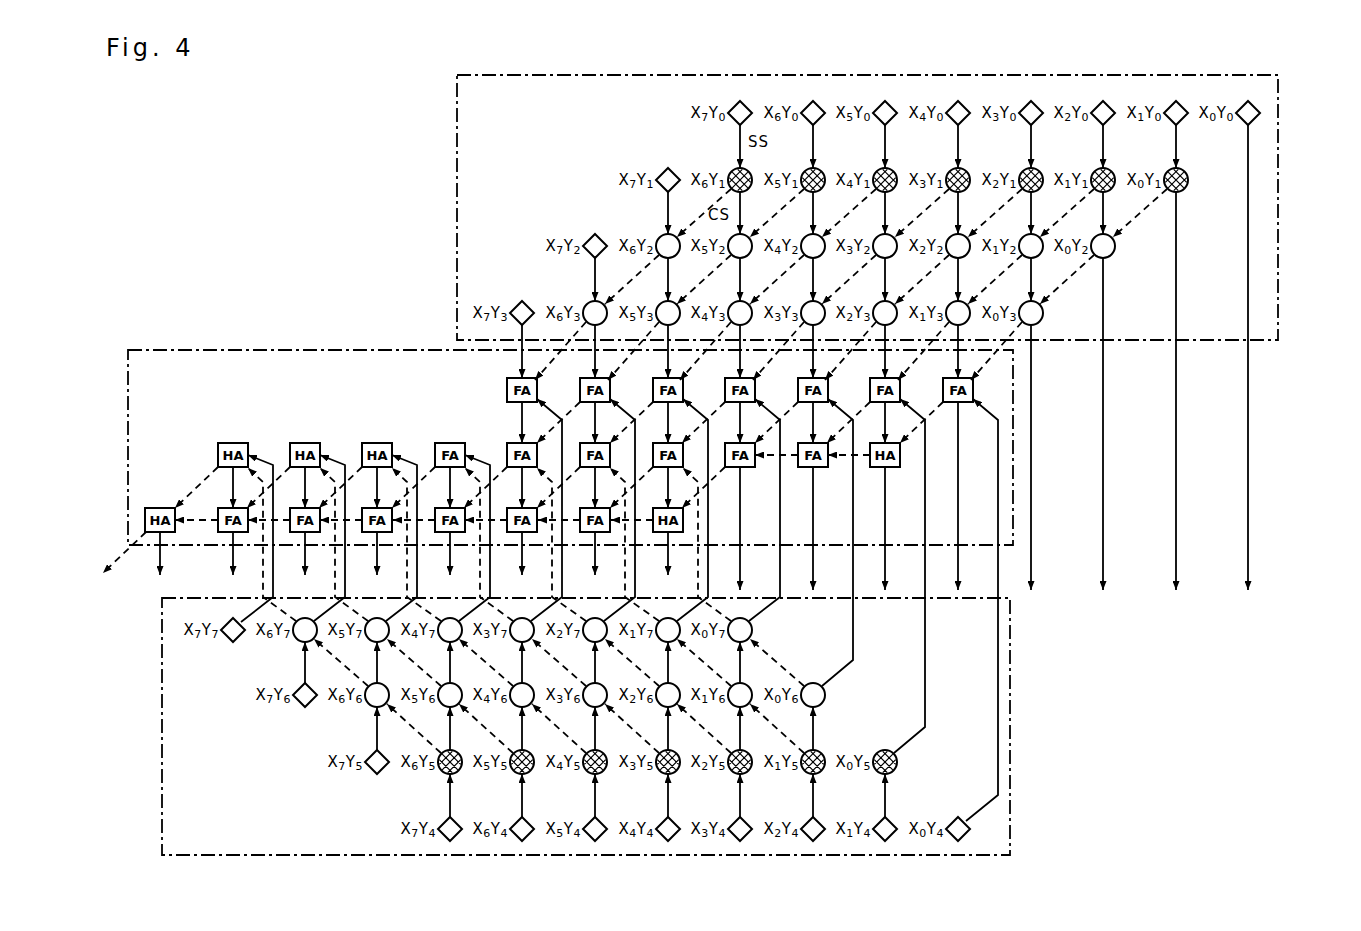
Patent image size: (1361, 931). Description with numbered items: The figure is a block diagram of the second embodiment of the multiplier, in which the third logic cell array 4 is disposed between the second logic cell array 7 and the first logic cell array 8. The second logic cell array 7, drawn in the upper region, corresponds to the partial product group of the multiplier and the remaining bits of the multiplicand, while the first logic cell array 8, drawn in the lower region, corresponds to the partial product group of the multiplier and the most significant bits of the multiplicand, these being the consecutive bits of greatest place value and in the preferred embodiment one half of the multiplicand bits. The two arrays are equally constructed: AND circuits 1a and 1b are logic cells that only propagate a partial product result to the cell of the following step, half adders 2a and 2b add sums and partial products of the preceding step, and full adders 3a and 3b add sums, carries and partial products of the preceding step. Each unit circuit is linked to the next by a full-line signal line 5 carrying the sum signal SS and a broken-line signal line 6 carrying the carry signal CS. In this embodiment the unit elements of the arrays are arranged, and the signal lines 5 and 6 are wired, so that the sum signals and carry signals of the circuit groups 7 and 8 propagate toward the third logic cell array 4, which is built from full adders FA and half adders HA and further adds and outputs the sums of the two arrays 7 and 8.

The AND circuit 1a is at (1261, 113).
The half adder 2a is at (1189, 181).
The full adder 3a is at (1116, 248).
The AND circuit 1b is at (971, 830).
The half adder 2b is at (898, 763).
The full adder 3b is at (826, 695).
The third logic cell array 4 is at (358, 350).
The signal line 5 is at (742, 150).
The signal line 6 is at (707, 217).
The second logic cell array 7 is at (457, 175).
The first logic cell array 8 is at (162, 668).